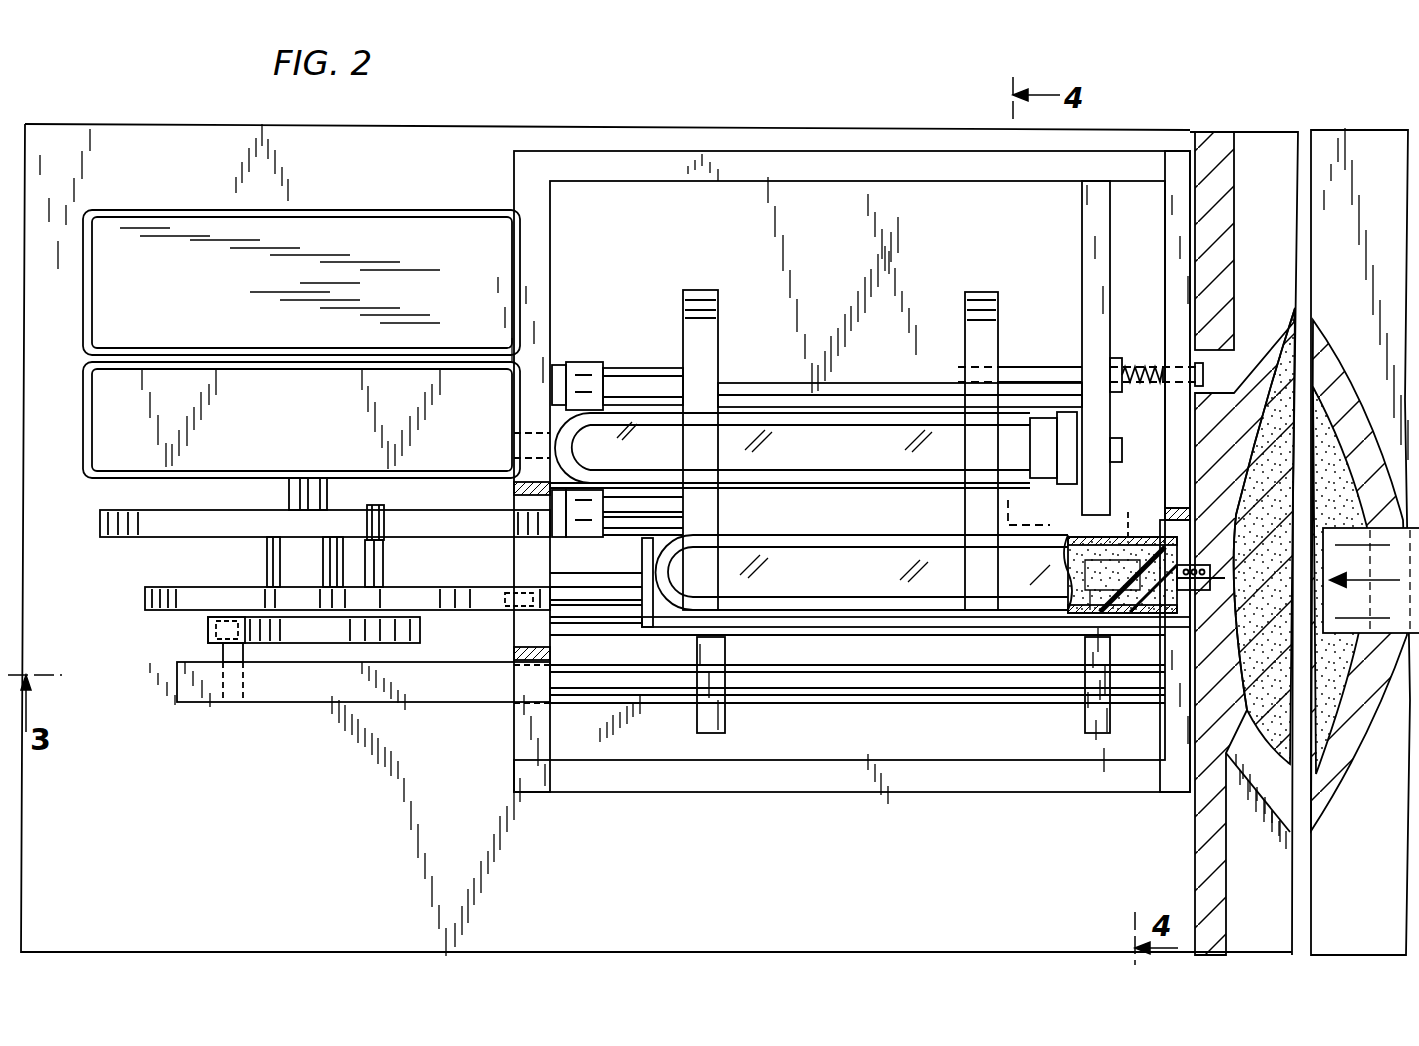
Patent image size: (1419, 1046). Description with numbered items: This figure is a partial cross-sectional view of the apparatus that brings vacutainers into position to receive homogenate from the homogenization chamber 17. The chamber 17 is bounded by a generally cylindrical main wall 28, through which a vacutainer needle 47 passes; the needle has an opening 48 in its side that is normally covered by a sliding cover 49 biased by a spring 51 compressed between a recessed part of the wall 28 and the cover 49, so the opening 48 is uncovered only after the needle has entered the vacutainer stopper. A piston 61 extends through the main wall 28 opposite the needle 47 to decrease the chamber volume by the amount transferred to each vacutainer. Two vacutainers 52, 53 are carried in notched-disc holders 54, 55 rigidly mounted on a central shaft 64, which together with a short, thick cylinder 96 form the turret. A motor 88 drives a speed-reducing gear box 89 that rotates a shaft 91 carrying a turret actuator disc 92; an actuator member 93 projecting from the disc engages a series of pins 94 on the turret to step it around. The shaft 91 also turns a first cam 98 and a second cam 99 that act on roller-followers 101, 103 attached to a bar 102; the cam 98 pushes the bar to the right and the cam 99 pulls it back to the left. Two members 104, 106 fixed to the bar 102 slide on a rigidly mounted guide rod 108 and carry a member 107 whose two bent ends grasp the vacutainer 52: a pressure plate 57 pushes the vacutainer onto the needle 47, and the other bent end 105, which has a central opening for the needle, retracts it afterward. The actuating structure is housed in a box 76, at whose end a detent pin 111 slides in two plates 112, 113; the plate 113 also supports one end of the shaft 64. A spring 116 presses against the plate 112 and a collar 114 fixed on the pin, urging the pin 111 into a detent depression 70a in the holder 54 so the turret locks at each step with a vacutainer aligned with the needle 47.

The homogenization chamber 17 is at (1355, 370).
The main wall 28 is at (1275, 355).
The vacutainer needle 47 is at (1105, 590).
The opening 48 is at (1129, 511).
The sliding cover 49 is at (1195, 530).
The spring 51 is at (1200, 592).
The vacutainer 52 is at (760, 535).
The vacutainer 53 is at (763, 412).
The holder 54 is at (995, 275).
The holder 55 is at (690, 290).
The pressure plate 57 is at (642, 628).
The piston 61 is at (1395, 598).
The central shaft 64 is at (1122, 447).
The detent depression 70a is at (968, 370).
The box 76 is at (822, 150).
The motor 88 is at (388, 225).
The speed-reducing gear box 89 is at (320, 416).
The shaft 91 is at (328, 487).
The turret actuator disc 92 is at (236, 516).
The actuator member 93 is at (386, 512).
The pins 94 is at (640, 555).
The cylinder 96 is at (635, 382).
The first cam 98 is at (425, 590).
The second cam 99 is at (422, 638).
The roller-follower 101 is at (510, 592).
The bar 102 is at (452, 697).
The roller-follower 103 is at (208, 626).
The member 104 is at (725, 727).
The bent end 105 is at (1190, 650).
The member 106 is at (1085, 725).
The member 107 is at (768, 642).
The guide rod 108 is at (632, 690).
The detent pin 111 is at (1045, 383).
The plate 112 is at (1166, 314).
The plate 113 is at (1104, 258).
The collar 114 is at (1120, 358).
The spring 116 is at (1140, 384).